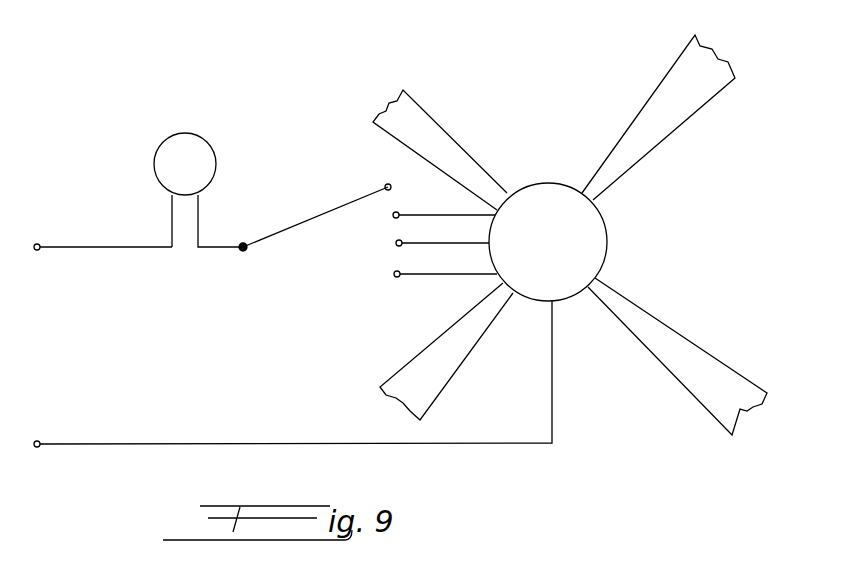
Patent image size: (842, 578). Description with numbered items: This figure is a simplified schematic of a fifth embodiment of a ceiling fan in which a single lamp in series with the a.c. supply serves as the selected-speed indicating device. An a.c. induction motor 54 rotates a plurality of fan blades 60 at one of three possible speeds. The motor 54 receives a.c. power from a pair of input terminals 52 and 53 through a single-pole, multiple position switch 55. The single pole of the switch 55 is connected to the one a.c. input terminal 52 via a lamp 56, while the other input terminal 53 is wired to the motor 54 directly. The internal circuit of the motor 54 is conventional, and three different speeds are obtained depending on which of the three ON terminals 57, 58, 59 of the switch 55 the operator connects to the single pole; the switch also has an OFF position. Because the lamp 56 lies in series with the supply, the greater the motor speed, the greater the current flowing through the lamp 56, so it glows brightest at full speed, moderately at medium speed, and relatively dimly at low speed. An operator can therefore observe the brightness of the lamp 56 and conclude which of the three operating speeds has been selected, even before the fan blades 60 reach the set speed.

The a.c. input terminal 52 is at (37, 244).
The a.c. input terminal 53 is at (37, 441).
The a.c. induction motor 54 is at (545, 183).
The single-pole, multiple position switch 55 is at (308, 262).
The lamp 56 is at (172, 140).
The ON terminal 57 is at (393, 215).
The ON terminal 58 is at (396, 243).
The ON terminal 59 is at (394, 274).
The fan blades 60 is at (420, 132).